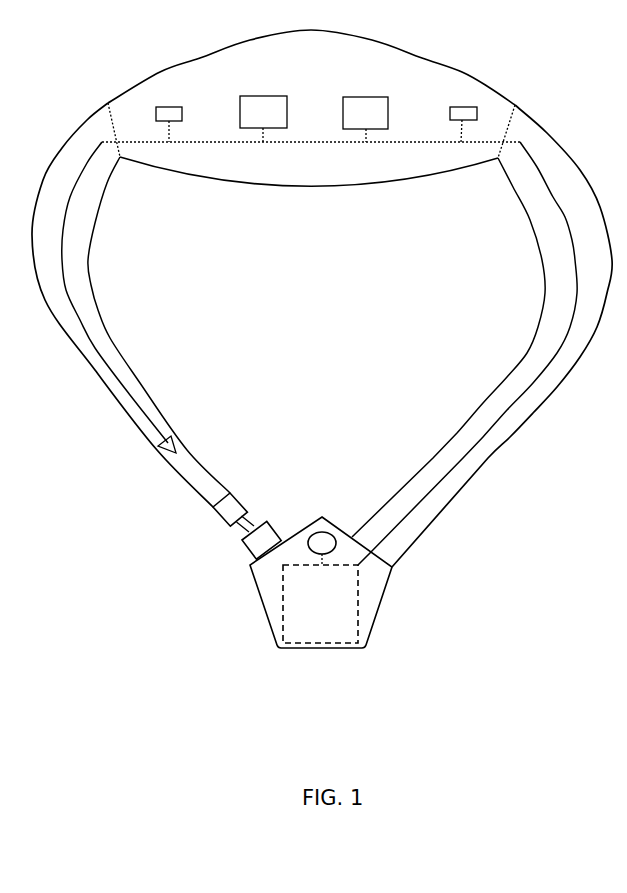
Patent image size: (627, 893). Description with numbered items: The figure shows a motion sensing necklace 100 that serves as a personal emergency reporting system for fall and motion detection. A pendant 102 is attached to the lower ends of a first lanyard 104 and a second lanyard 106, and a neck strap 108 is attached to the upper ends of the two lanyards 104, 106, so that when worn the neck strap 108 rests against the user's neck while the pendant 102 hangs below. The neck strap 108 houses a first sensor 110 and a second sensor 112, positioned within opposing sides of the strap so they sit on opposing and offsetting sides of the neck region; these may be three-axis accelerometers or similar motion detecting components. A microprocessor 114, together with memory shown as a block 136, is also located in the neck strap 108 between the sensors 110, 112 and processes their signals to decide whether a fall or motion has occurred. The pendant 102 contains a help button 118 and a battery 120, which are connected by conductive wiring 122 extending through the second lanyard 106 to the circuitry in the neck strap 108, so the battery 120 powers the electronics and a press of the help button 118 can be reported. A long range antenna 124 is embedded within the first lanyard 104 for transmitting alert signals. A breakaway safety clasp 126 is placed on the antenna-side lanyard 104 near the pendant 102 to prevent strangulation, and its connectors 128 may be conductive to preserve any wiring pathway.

The necklace 100 is at (88, 66).
The pendant 102 is at (378, 607).
The first lanyard 104 is at (120, 358).
The second lanyard 106 is at (505, 378).
The neck strap 108 is at (307, 187).
The first sensor 110 is at (182, 113).
The second sensor 112 is at (450, 111).
The microprocessor 114 is at (263, 119).
The memory 136 is at (365, 119).
The help button 118 is at (322, 548).
The battery 120 is at (278, 594).
The conductive wiring 122 is at (565, 215).
The long range antenna 124 is at (65, 223).
The breakaway safety clasp 126 is at (240, 499).
The connectors 128 is at (237, 539).